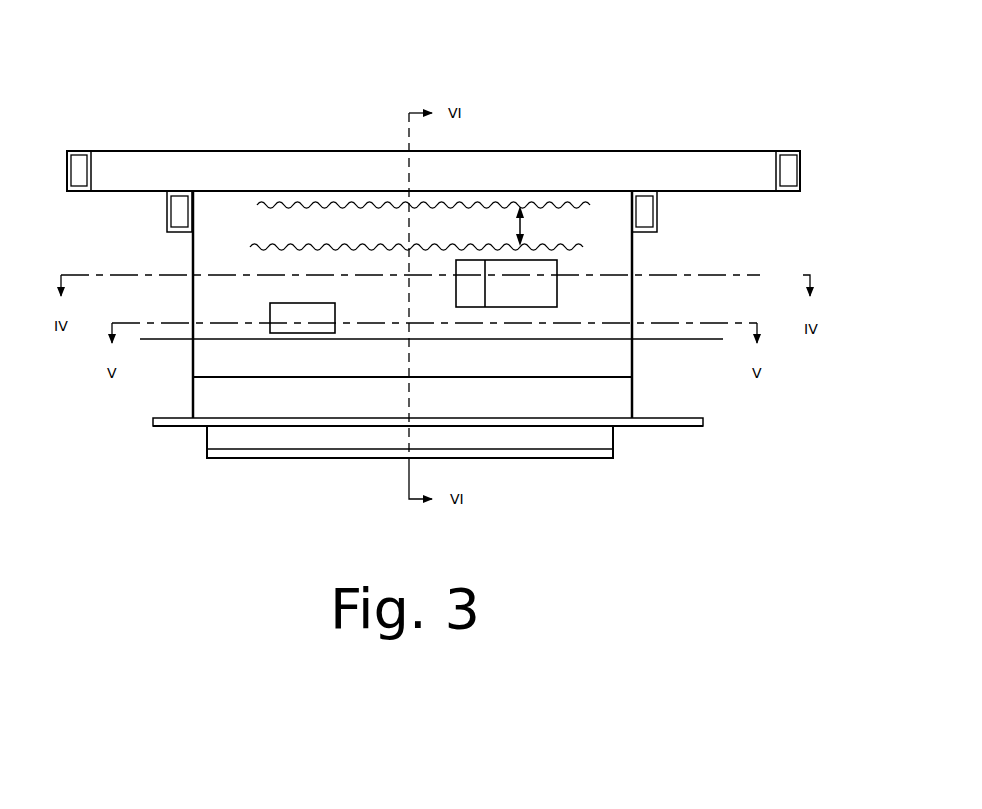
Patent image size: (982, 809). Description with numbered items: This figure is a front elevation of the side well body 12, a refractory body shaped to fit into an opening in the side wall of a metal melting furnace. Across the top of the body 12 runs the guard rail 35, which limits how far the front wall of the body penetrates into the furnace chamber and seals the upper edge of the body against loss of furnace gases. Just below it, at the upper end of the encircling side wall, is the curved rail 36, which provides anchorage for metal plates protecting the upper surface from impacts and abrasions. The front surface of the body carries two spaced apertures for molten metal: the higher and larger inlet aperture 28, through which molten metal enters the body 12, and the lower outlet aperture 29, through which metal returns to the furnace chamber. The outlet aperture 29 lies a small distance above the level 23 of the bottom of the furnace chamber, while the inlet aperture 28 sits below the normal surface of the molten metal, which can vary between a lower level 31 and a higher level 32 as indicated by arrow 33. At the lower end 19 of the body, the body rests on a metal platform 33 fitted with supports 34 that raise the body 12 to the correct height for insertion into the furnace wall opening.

The body 12 is at (607, 98).
The guard rail 35 is at (172, 152).
The curved rail 36 is at (178, 216).
The higher level 32 is at (257, 205).
The lower level 31 is at (250, 247).
The arrow 33 is at (524, 229).
The inlet aperture 28 is at (557, 294).
The outlet aperture 29 is at (335, 314).
The level of the bottom of the furnace chamber 23 is at (655, 339).
The lower end 19 is at (623, 426).
The supports 34 is at (230, 435).